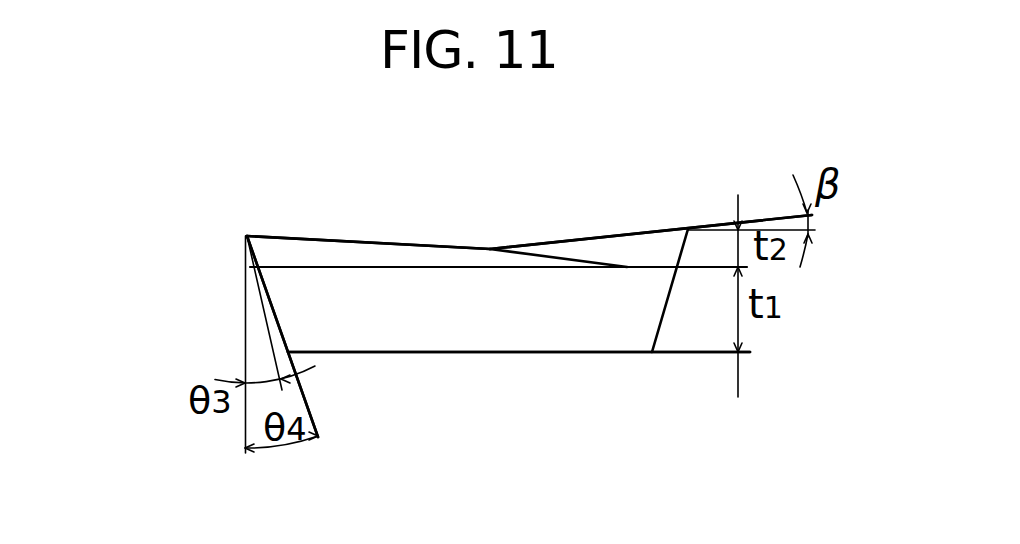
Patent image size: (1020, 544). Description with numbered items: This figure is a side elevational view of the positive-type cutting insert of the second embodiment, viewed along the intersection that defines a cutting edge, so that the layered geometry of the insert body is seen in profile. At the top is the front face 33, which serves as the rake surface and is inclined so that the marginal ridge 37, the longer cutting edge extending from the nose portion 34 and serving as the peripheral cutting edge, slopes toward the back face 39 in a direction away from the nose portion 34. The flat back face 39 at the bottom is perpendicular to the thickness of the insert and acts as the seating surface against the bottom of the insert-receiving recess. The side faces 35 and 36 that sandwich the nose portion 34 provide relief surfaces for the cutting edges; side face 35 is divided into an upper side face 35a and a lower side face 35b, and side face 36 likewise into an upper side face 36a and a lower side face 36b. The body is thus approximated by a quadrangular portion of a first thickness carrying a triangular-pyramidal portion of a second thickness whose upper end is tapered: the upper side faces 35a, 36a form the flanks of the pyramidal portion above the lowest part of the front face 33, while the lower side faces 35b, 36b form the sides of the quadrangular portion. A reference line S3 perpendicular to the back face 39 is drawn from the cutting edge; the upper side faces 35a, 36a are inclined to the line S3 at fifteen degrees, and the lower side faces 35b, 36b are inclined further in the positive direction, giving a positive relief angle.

The front face 33 is at (653, 232).
The nose portion 34 is at (247, 236).
The side face 35 is at (531, 280).
The upper side face 35a is at (385, 257).
The lower side face 35b is at (427, 297).
The side face 36 is at (183, 336).
The upper side face 36a is at (246, 257).
The lower side face 36b is at (274, 322).
The marginal ridge 37 is at (358, 243).
The back face 39 is at (583, 352).
The line perpendicular to back face S3 is at (240, 430).